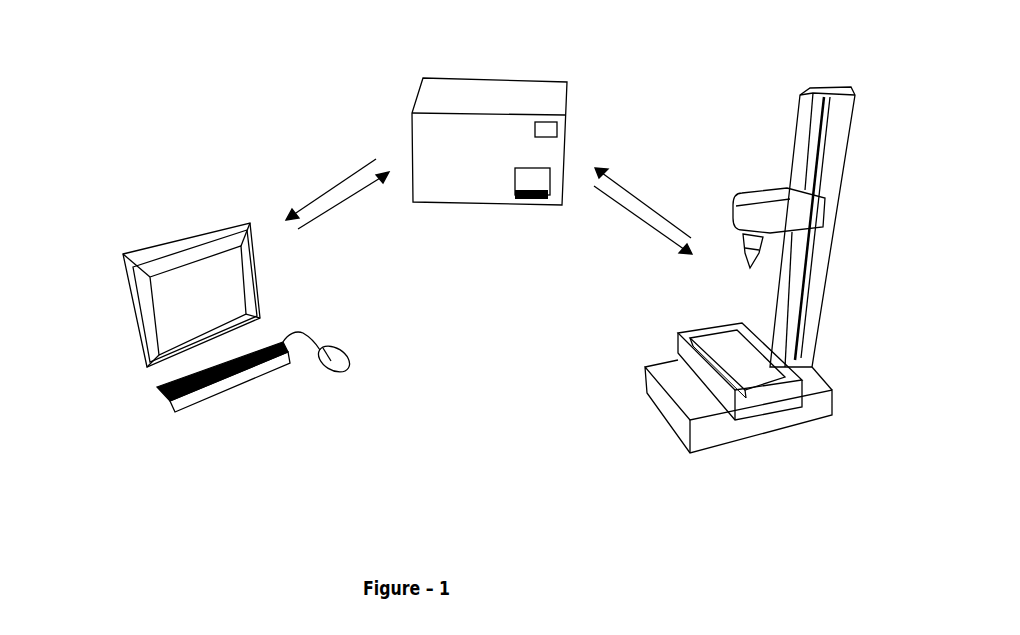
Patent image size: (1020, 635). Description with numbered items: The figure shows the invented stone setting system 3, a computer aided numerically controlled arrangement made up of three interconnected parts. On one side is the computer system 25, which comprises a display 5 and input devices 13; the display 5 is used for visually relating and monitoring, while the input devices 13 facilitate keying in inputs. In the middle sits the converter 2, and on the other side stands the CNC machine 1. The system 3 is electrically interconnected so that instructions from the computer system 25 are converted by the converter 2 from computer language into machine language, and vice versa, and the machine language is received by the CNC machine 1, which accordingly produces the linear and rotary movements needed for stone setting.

The CNC machine 1 is at (862, 170).
The converter 2 is at (476, 68).
The system 3 is at (439, 488).
The display 5 is at (193, 205).
The input devices 13 is at (249, 398).
The computer system 25 is at (80, 333).